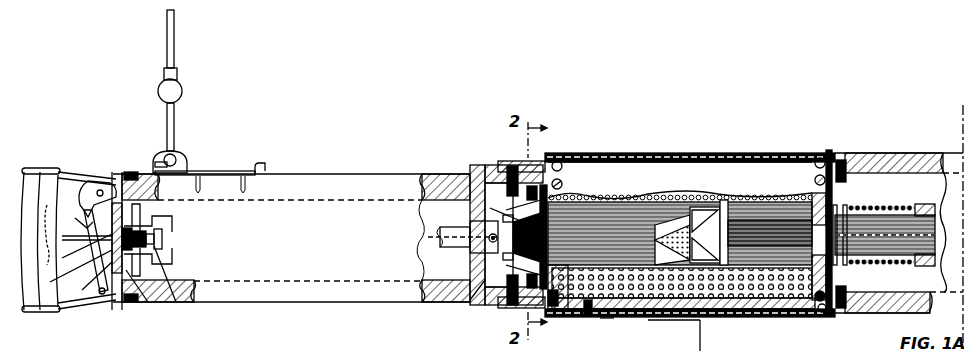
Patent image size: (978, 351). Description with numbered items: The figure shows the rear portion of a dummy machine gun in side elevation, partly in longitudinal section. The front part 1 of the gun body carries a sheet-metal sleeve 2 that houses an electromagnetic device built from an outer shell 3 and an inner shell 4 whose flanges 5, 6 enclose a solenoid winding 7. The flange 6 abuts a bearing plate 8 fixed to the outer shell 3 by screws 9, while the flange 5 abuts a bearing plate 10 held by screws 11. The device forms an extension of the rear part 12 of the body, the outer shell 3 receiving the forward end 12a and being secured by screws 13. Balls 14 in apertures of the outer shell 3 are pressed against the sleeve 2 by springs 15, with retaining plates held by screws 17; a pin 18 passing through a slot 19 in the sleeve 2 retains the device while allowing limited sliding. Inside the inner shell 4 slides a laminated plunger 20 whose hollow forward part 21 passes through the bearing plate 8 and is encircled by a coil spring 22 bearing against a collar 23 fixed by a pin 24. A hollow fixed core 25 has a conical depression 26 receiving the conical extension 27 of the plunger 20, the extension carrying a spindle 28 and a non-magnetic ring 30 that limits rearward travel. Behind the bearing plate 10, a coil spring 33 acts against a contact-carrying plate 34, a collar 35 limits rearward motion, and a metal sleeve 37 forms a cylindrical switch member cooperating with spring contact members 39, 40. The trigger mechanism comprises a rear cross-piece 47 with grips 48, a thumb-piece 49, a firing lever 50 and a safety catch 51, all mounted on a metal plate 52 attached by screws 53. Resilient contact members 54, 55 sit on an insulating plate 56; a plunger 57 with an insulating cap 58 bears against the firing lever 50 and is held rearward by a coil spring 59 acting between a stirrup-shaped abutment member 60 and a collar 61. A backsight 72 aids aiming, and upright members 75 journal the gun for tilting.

The front part of the gun body 1 is at (912, 153).
The sleeve 2 is at (730, 153).
The outer shell 3 is at (610, 165).
The inner shell 4 is at (748, 270).
The flange 5 is at (560, 308).
The flange 6 is at (816, 300).
The solenoid winding 7 is at (656, 322).
The bearing plate 8 is at (830, 210).
The screws 9 is at (814, 175).
The bearing plate 10 is at (530, 305).
The screws 11 is at (562, 184).
The rear part of the gun body 12 is at (368, 186).
The forward end of the rear part 12a is at (475, 178).
The screws 13 is at (510, 162).
The balls 14 is at (557, 161).
The springs 15 is at (830, 290).
The screws 17 is at (830, 155).
The pin 18 is at (588, 312).
The slot 19 is at (617, 324).
The plunger 20 is at (780, 212).
The forward part of the plunger 21 is at (930, 240).
The coil spring 22 is at (888, 206).
The collar 23 is at (920, 264).
The pin 24 is at (924, 204).
The fixed core 25 is at (628, 212).
The conical depression 26 is at (722, 285).
The conical extension 27 is at (708, 210).
The spindle 28 is at (678, 225).
The ring 30 is at (726, 220).
The coil spring 33 is at (512, 259).
The contact-carrying plate 34 is at (512, 217).
The collar 35 is at (458, 228).
The metal sleeve 37 is at (480, 254).
The spring contact member 39 is at (510, 180).
The spring contact member 40 is at (478, 302).
The rear cross-piece 47 is at (78, 176).
The grips 48 is at (40, 183).
The thumb-piece 49 is at (62, 232).
The firing lever 50 is at (62, 258).
The safety catch 51 is at (90, 188).
The metal plate 52 is at (116, 200).
The screws 53 is at (118, 302).
The resilient contact member 54 is at (162, 238).
The resilient contact member 55 is at (176, 258).
The plate of insulating material 56 is at (128, 174).
The plunger 57 is at (71, 274).
The cap of insulating material 58 is at (176, 302).
The coil spring 59 is at (150, 228).
The stirrup-shaped abutment member 60 is at (148, 302).
The collar 61 is at (89, 280).
The backsight 72 is at (175, 50).
The upright members 75 is at (677, 341).